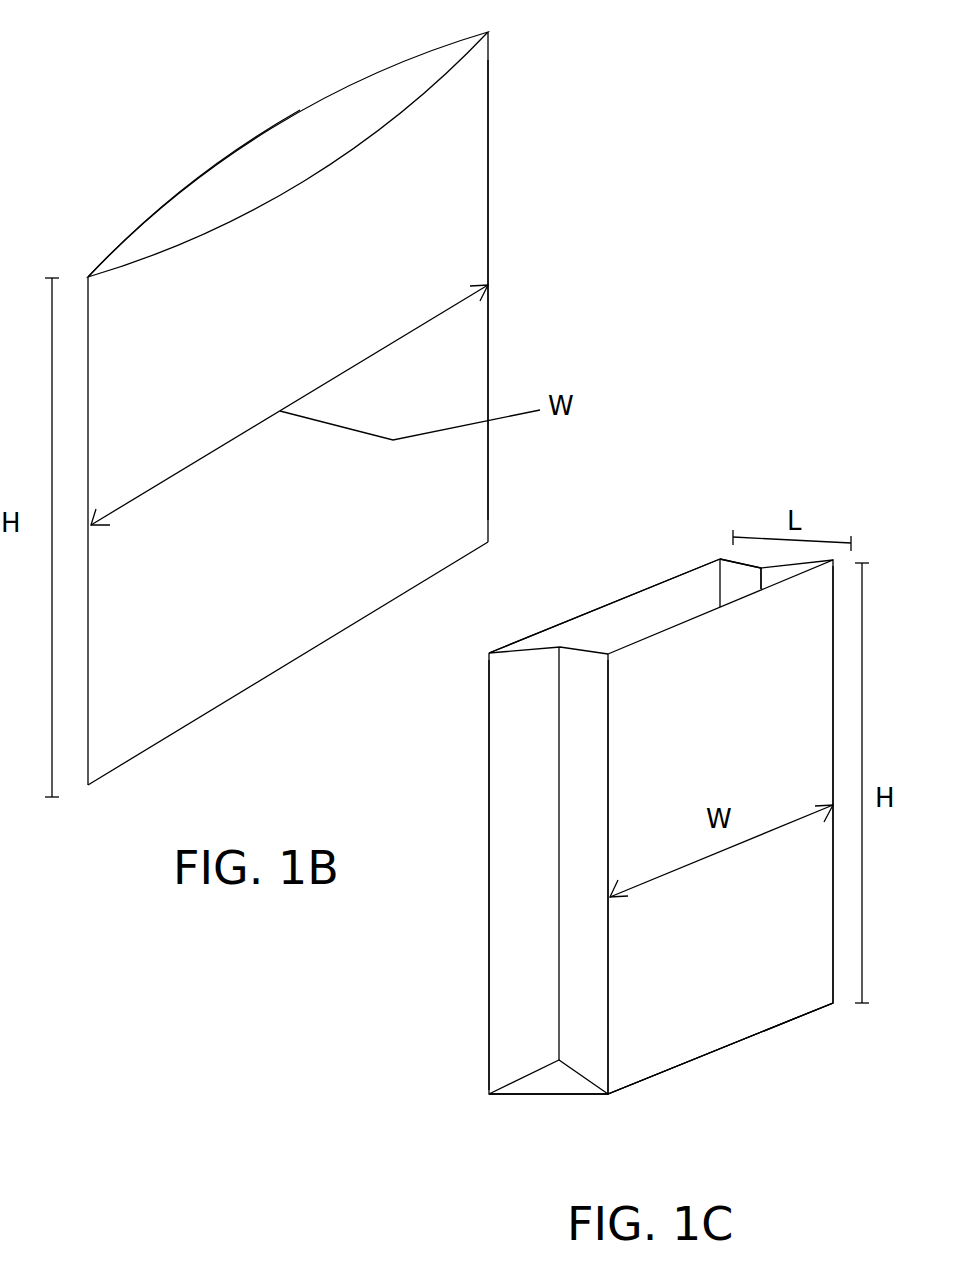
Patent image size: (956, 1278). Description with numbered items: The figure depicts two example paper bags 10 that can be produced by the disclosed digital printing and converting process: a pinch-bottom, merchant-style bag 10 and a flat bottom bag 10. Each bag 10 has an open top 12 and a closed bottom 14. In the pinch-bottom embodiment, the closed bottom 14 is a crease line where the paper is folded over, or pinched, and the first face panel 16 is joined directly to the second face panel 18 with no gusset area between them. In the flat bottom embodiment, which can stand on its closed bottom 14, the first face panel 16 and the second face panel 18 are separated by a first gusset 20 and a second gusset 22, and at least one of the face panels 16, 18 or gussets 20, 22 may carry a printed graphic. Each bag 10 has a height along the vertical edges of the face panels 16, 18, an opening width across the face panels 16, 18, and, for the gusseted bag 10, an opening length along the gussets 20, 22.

In FIG. 1B, the bag 10 is at (520, 128).
In FIG. 1C, the bag 10 is at (472, 1003).
In FIG. 1B, the open top 12 is at (288, 154).
In FIG. 1C, the open top 12 is at (661, 565).
In FIG. 1B, the closed bottom 14 is at (288, 663).
In FIG. 1C, the closed bottom 14 is at (663, 1069).
In FIG. 1B, the first face panel 16 is at (435, 203).
In FIG. 1C, the first face panel 16 is at (687, 1008).
In FIG. 1B, the second face panel 18 is at (162, 222).
In FIG. 1C, the second face panel 18 is at (593, 638).
In FIG. 1C, the first gusset 20 is at (527, 877).
In FIG. 1C, the second gusset 22 is at (721, 525).